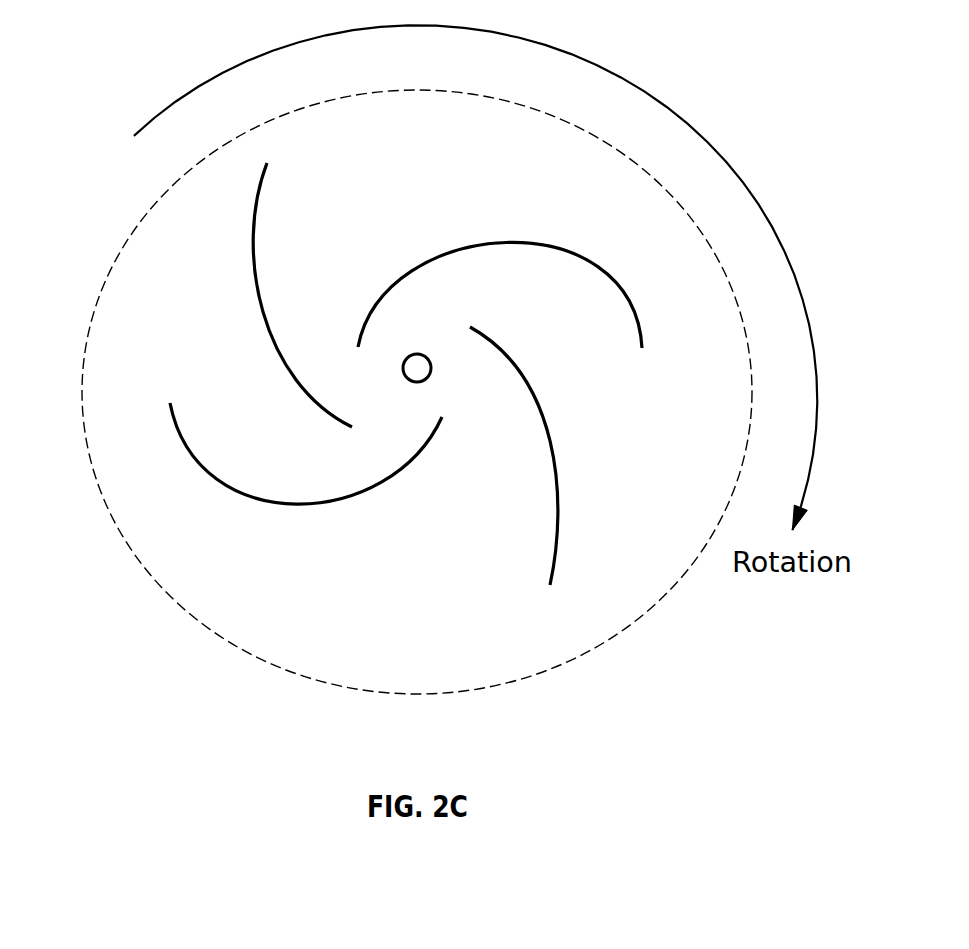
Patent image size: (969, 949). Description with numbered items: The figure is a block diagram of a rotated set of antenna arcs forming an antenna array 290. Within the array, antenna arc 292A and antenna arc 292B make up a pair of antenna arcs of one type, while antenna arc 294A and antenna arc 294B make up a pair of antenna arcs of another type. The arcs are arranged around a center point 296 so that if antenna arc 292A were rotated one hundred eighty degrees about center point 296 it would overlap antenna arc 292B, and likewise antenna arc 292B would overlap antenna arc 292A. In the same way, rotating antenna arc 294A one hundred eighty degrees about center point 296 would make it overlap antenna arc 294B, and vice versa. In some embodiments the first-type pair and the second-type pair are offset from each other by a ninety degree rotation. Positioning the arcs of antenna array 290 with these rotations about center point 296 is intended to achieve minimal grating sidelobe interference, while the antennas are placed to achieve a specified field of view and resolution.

The antenna array 290 is at (98, 298).
The antenna arc 292A is at (252, 247).
The antenna arc 292B is at (548, 427).
The antenna arc 294A is at (495, 242).
The antenna arc 294B is at (303, 507).
The center point 296 is at (432, 367).